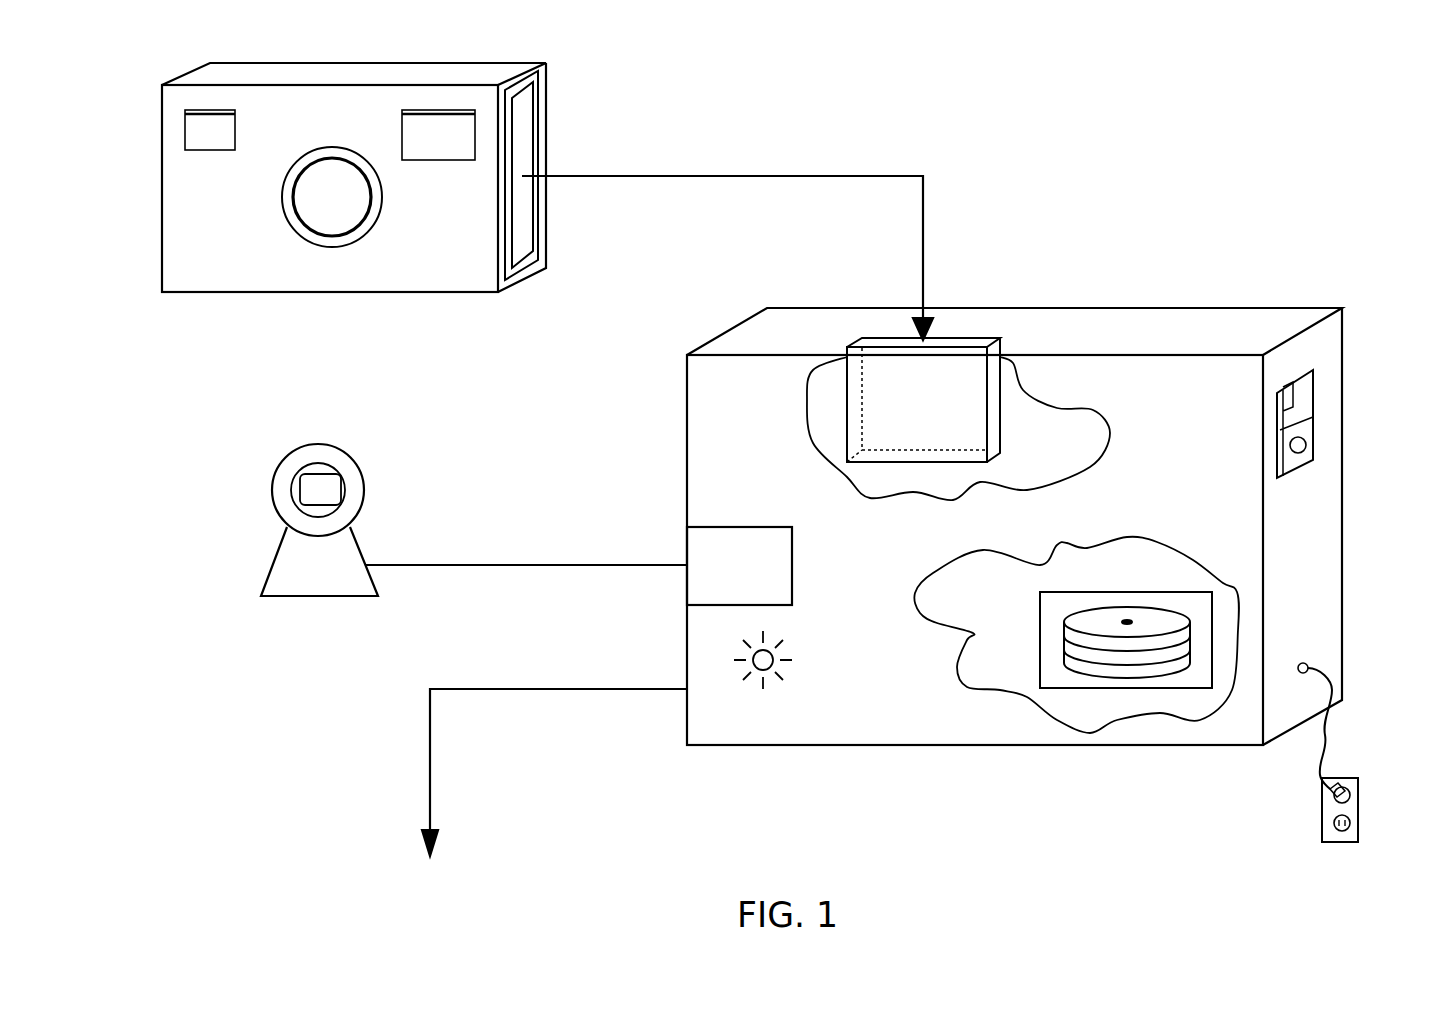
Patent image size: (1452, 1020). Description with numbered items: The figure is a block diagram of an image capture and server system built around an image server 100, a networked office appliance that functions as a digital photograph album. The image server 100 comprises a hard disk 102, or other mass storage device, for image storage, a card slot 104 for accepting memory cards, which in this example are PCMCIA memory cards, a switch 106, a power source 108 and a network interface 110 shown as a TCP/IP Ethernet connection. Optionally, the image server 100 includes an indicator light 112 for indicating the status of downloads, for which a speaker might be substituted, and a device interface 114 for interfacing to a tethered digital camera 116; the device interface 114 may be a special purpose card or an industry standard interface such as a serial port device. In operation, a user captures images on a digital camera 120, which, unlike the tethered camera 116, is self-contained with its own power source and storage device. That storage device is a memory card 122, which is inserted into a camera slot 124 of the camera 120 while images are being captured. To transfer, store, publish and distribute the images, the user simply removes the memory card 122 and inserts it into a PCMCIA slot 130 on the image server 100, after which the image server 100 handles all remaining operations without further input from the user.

The image server 100 is at (1165, 307).
The hard disk 102 is at (1040, 610).
The card slot 104 is at (995, 425).
The switch 106 is at (1315, 440).
The power source 108 is at (1325, 740).
The network interface 110 is at (614, 686).
The indicator light 112 is at (792, 650).
The device interface 114 is at (722, 522).
The tethered digital camera 116 is at (367, 490).
The digital camera 120 is at (443, 293).
The memory card 122 is at (522, 218).
The camera slot 124 is at (535, 98).
The PCMCIA slot 130 is at (885, 335).